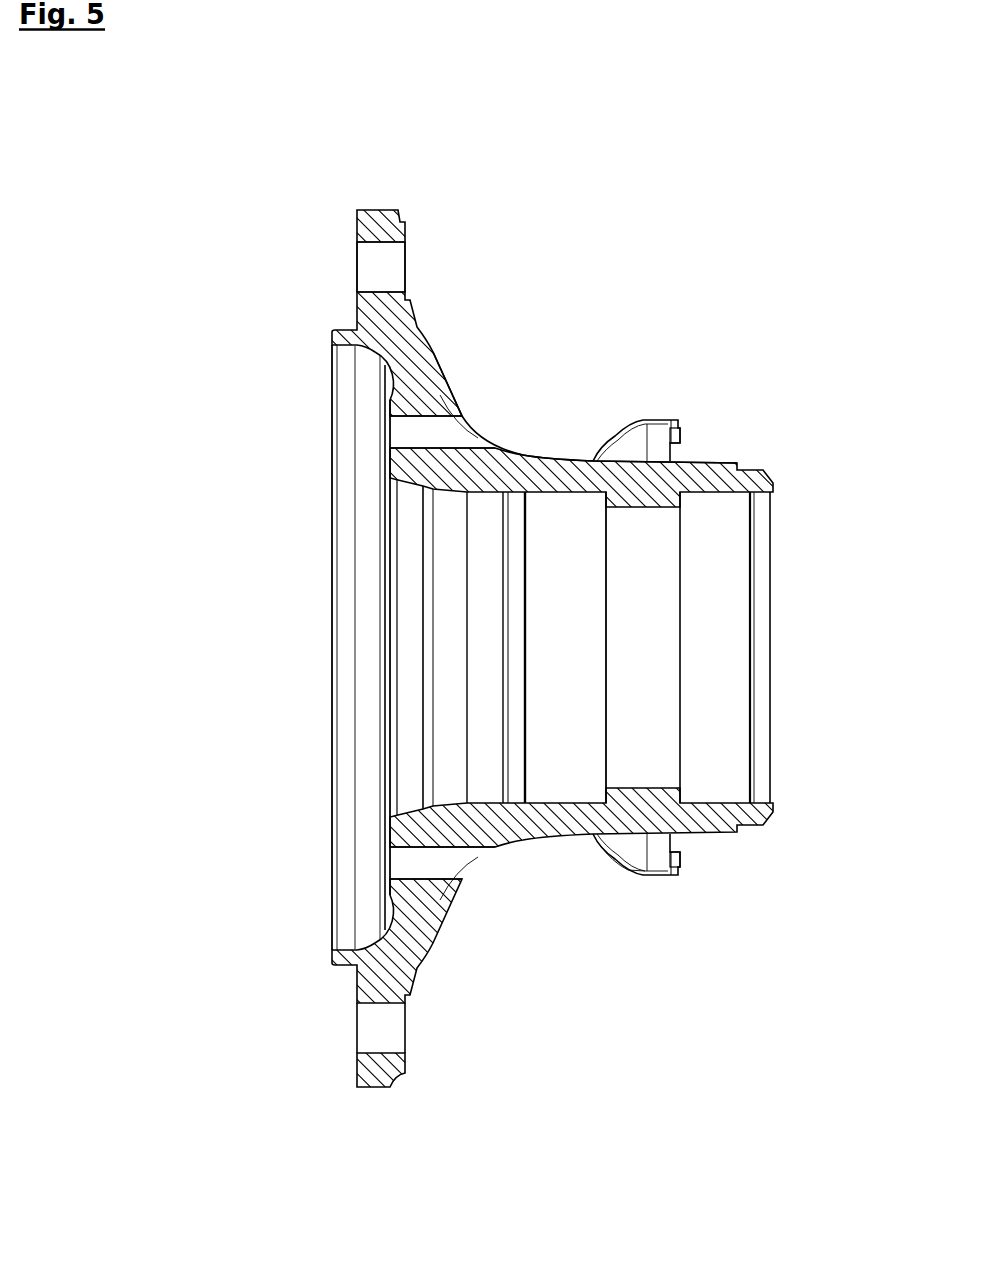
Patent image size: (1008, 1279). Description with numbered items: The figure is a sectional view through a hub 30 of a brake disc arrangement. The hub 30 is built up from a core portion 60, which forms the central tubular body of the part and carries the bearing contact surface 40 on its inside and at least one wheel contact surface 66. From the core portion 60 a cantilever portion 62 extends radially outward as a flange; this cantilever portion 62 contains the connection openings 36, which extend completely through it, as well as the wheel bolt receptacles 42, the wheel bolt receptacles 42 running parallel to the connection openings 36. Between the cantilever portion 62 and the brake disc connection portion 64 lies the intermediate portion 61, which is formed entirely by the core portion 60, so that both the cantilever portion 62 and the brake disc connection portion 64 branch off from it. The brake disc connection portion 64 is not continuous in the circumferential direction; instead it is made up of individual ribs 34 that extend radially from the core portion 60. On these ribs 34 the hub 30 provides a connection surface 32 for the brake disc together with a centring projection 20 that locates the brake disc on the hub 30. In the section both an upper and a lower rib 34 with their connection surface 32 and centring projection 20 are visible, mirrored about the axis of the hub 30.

The centring projection 20 is at (680, 430).
The hub 30 is at (213, 422).
The connection surface 32 is at (678, 455).
The rib 34 is at (637, 860).
The connection opening 36 is at (408, 433).
The bearing contact surface 40 is at (718, 493).
The wheel bolt receptacle 42 is at (385, 263).
The core portion 60 is at (558, 480).
The intermediate portion 61 is at (562, 422).
The cantilever portion 62 is at (308, 167).
The brake disc connection portion 64 is at (676, 362).
The wheel contact surface 66 is at (355, 992).